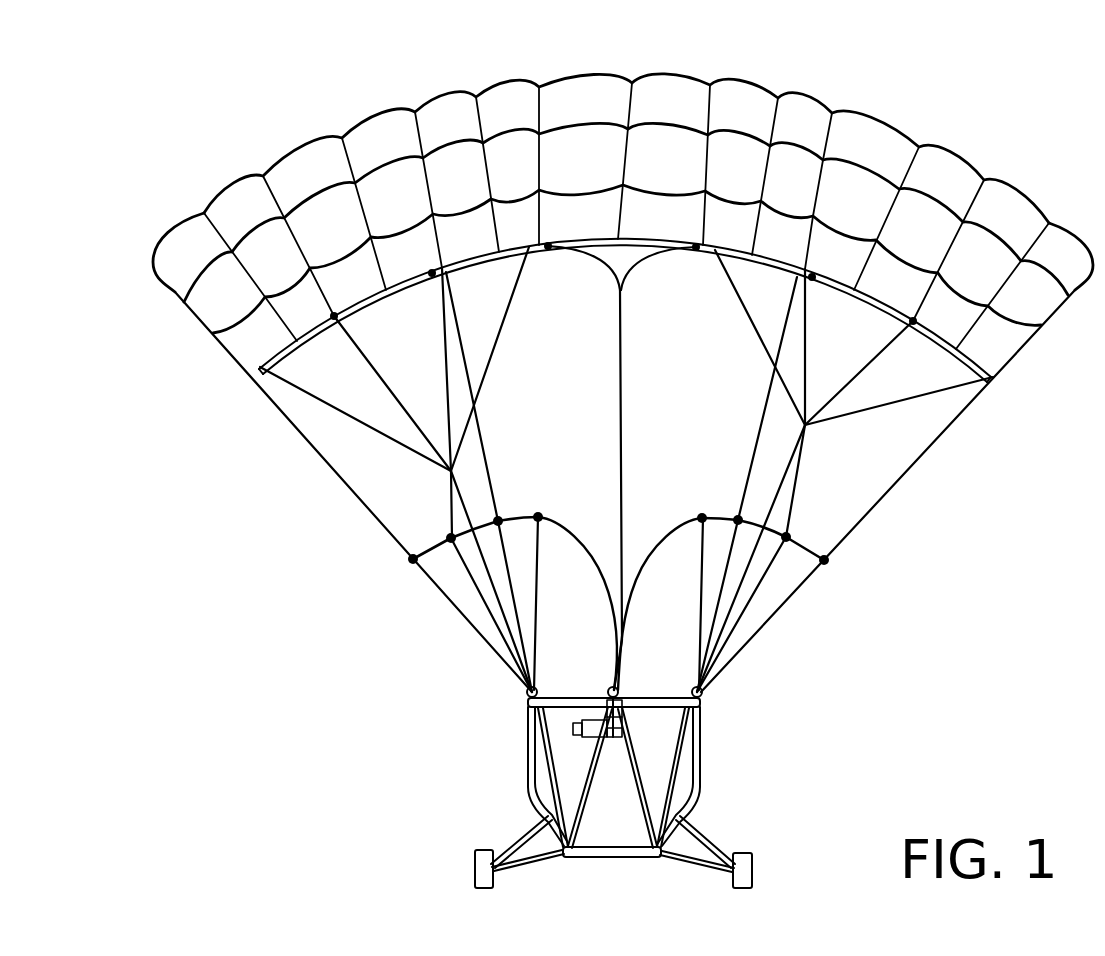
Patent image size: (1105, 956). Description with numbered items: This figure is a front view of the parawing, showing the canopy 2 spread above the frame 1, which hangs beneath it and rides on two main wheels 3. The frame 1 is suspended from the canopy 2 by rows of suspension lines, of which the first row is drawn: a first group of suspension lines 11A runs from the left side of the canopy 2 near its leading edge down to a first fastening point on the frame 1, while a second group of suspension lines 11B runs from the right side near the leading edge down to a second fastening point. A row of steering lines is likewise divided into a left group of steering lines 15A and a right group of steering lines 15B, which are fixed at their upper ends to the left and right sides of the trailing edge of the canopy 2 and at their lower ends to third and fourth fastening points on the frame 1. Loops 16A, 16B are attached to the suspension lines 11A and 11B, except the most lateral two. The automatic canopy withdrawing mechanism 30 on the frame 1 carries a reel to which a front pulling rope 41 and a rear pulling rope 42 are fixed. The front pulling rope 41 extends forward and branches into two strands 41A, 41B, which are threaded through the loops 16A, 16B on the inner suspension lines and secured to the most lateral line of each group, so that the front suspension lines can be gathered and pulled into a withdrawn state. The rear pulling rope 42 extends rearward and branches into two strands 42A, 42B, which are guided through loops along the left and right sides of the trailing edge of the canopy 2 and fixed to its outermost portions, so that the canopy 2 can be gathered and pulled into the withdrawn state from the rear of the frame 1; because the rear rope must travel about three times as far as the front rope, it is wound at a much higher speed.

The frame 1 is at (535, 722).
The canopy 2 is at (883, 130).
The main wheels 3 is at (475, 855).
The first group of suspension lines 11A is at (702, 594).
The second group of suspension lines 11B is at (537, 610).
The left group of steering lines 15A is at (807, 352).
The right group of steering lines 15B is at (443, 380).
The right connecting links 16A is at (784, 535).
The left connecting links 16B is at (455, 536).
The automatic canopy withdrawing mechanism 30 is at (613, 743).
The front pulling rope 41 is at (612, 678).
The strand 41A is at (667, 543).
The strand 41B is at (578, 540).
The rear pulling rope 42 is at (622, 412).
The strand 42A is at (650, 258).
The strand 42B is at (590, 258).